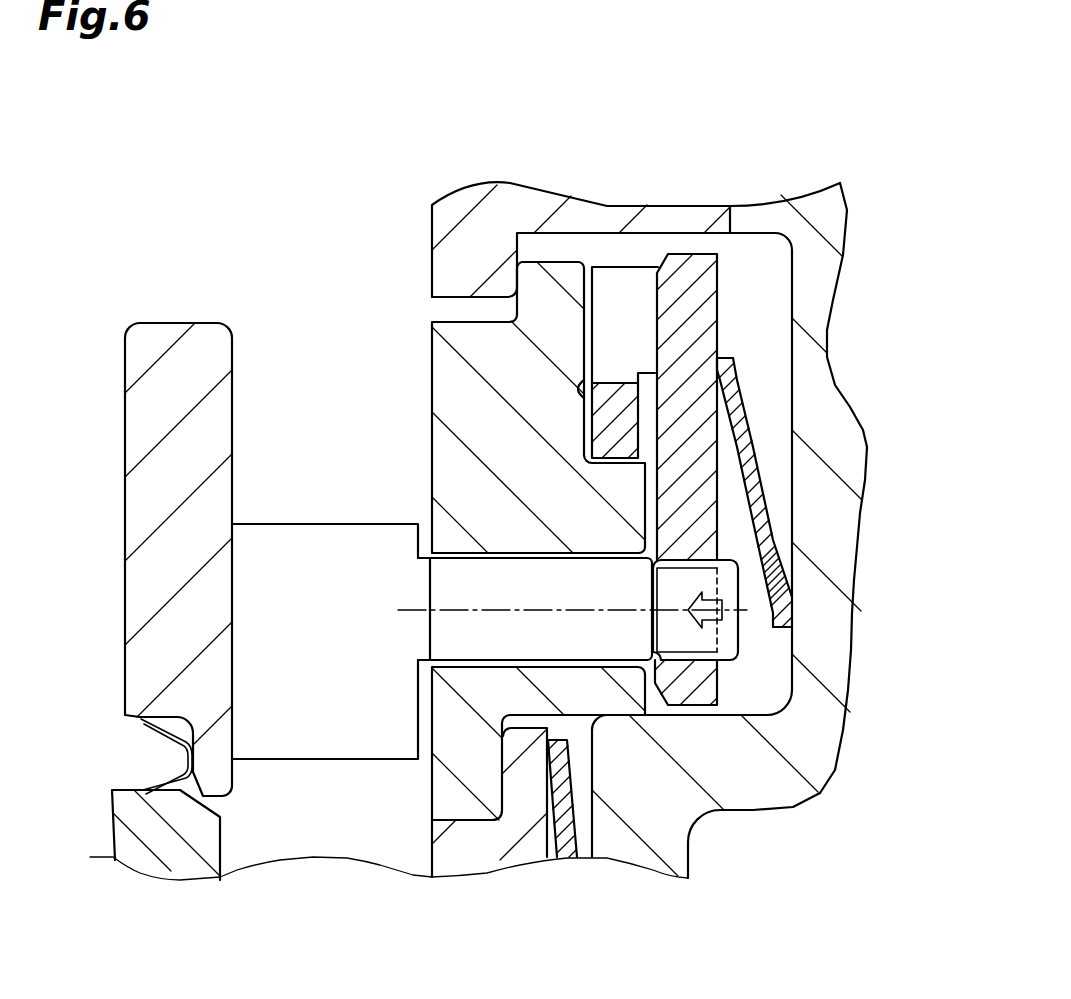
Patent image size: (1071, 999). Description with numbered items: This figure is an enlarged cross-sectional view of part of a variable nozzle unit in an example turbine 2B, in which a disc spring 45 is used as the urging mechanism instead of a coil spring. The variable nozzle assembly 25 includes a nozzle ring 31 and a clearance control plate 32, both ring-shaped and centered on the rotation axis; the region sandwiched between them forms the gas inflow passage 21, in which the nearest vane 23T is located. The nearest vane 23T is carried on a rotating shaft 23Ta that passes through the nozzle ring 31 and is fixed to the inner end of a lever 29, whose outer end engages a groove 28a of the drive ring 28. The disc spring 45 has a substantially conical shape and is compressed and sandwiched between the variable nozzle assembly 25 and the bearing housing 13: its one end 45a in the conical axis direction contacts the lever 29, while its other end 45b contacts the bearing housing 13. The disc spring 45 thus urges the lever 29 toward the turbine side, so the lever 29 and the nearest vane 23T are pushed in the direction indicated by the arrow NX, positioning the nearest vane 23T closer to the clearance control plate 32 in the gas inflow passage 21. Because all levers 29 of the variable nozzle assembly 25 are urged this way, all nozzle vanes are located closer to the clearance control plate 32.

The turbine 2B is at (843, 183).
The bearing housing 13 is at (750, 800).
The gas inflow passage 21 is at (341, 456).
The nearest vane 23T is at (260, 589).
The shaft portion 23Ta is at (558, 637).
The variable nozzle assembly 25 is at (543, 262).
The drive ring 28 is at (603, 265).
The grooves 28a is at (632, 300).
The lever 29 is at (703, 328).
The nozzle ring 31 is at (443, 372).
The clearance control plate 32 is at (183, 355).
The disc spring 45 is at (757, 498).
The one end of the disc spring 45a is at (725, 367).
The other end of the disc spring 45b is at (790, 623).
The axis NX is at (592, 603).